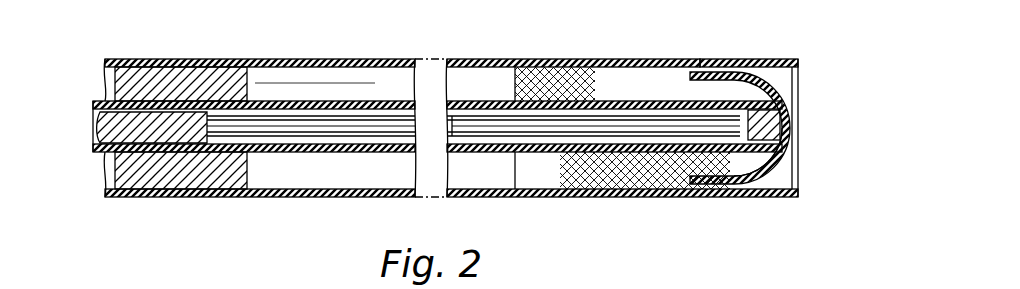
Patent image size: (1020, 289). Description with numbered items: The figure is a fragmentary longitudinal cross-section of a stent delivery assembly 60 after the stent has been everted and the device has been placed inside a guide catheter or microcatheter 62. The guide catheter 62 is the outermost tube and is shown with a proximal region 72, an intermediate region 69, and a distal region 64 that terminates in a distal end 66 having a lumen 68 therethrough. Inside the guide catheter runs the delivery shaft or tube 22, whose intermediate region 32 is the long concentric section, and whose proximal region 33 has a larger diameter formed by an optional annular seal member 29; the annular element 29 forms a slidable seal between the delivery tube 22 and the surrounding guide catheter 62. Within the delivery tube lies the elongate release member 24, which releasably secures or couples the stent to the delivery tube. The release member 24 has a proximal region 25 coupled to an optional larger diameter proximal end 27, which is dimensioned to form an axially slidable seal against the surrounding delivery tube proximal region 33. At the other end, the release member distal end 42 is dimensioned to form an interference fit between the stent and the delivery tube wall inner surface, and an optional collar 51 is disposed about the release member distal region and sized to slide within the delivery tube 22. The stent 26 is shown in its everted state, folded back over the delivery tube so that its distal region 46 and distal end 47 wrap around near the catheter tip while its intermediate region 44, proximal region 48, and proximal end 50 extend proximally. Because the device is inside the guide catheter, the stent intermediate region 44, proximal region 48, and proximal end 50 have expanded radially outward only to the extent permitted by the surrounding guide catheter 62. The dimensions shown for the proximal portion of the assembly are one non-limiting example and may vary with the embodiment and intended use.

The delivery shaft or tube 22 is at (285, 95).
The elongate release member 24 is at (323, 117).
The release member proximal region 25 is at (270, 128).
The stent 26 is at (697, 198).
The release member proximal end 27 is at (100, 130).
The annular seal member 29 is at (180, 80).
The delivery tube intermediate region 32 is at (395, 195).
The delivery tube proximal region 33 is at (140, 160).
The release member distal end 42 is at (780, 125).
The stent intermediate region 44 is at (640, 198).
The stent distal region 46 is at (790, 152).
The stent distal end 47 is at (745, 72).
The stent proximal region 48 is at (563, 183).
The stent proximal end 50 is at (505, 190).
The collar 51 is at (700, 100).
The stent delivery assembly 60 is at (640, 45).
The guide catheter or microcatheter 62 is at (515, 61).
The guide catheter distal region 64 is at (727, 60).
The guide catheter distal end 66 is at (798, 60).
The guide catheter lumen 68 is at (800, 72).
The guide catheter intermediate region 69 is at (540, 66).
The guide catheter proximal region 72 is at (118, 61).